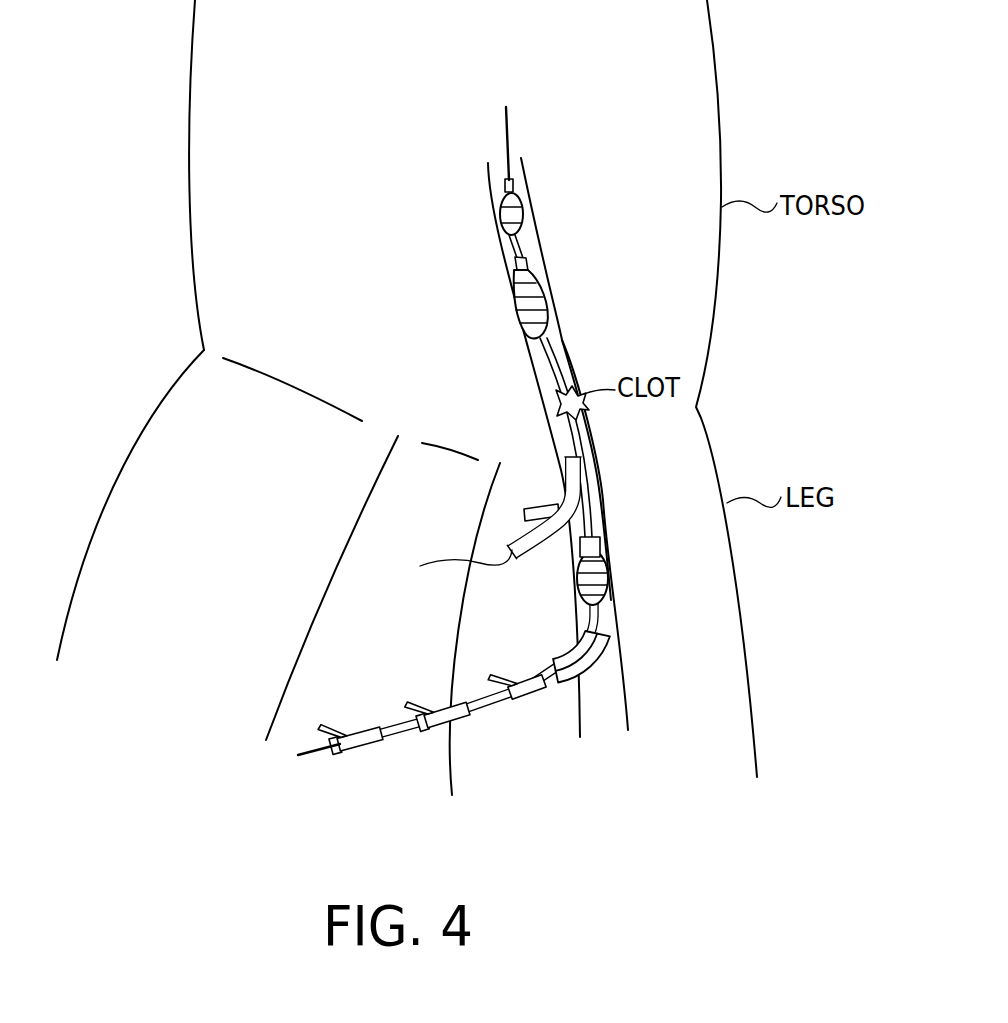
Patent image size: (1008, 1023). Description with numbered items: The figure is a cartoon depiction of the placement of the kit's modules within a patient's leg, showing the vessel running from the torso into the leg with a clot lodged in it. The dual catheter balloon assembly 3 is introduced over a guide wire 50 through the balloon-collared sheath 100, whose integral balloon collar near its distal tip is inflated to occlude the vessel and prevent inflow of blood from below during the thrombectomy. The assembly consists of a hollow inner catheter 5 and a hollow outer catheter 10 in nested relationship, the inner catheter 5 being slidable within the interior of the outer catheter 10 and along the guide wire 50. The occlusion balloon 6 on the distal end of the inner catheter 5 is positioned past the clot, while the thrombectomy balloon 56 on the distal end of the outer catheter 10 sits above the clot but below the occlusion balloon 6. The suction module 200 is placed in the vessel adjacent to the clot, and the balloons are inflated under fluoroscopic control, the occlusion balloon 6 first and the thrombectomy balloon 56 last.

The guide wire 50 is at (505, 130).
The occlusion balloon 6 is at (523, 208).
The thrombectomy balloon 56 is at (549, 293).
The suction module 200 is at (541, 508).
The outer catheter 10 is at (558, 684).
The balloon-collared sheath 100 is at (525, 699).
The catheter balloon assembly 3 is at (435, 732).
The inner catheter 5 is at (358, 750).